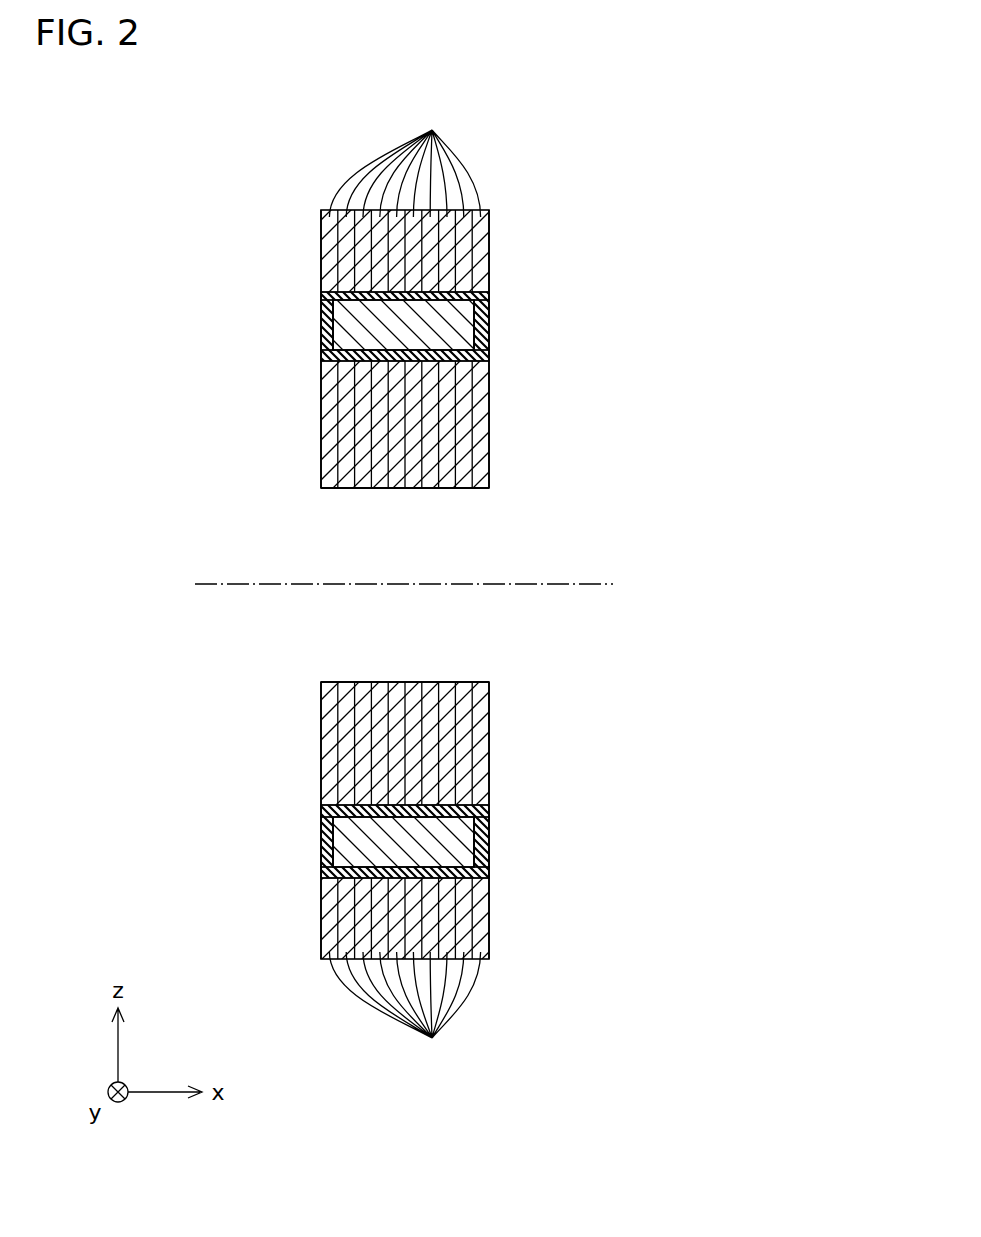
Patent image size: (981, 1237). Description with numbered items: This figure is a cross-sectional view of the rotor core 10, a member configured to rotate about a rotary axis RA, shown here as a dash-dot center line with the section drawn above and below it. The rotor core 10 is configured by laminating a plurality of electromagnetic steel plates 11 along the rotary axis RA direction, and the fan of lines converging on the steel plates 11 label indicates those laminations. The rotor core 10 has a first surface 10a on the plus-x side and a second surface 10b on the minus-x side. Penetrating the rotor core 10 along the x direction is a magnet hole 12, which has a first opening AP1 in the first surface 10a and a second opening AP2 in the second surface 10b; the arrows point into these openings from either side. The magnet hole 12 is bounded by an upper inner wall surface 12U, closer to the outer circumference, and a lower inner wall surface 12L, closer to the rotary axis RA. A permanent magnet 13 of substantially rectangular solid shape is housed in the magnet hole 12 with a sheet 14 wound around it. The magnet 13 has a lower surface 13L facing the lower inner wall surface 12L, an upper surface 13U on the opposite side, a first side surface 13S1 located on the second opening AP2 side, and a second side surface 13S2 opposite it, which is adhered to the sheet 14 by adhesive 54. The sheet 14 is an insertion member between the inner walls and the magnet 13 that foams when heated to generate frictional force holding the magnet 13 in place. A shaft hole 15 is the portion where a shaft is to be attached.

The rotor core 10 is at (637, 78).
The electromagnetic steel plates 11 is at (404, 584).
The first surface 10a is at (489, 225).
The second surface 10b is at (321, 224).
The magnet hole 12 is at (515, 297).
The upper inner wall surface 12U is at (321, 296).
The lower inner wall surface 12L is at (321, 352).
The magnet 13 is at (338, 398).
The upper surface 13U is at (489, 265).
The lower surface 13L is at (489, 404).
The first side surface 13S1 is at (321, 322).
The second side surface 13S2 is at (489, 322).
The sheet 14 is at (325, 430).
The shaft hole 15 is at (445, 488).
The adhesive 54 is at (489, 343).
The first opening AP1 is at (515, 315).
The second opening AP2 is at (293, 312).
The rotary axis RA is at (583, 584).